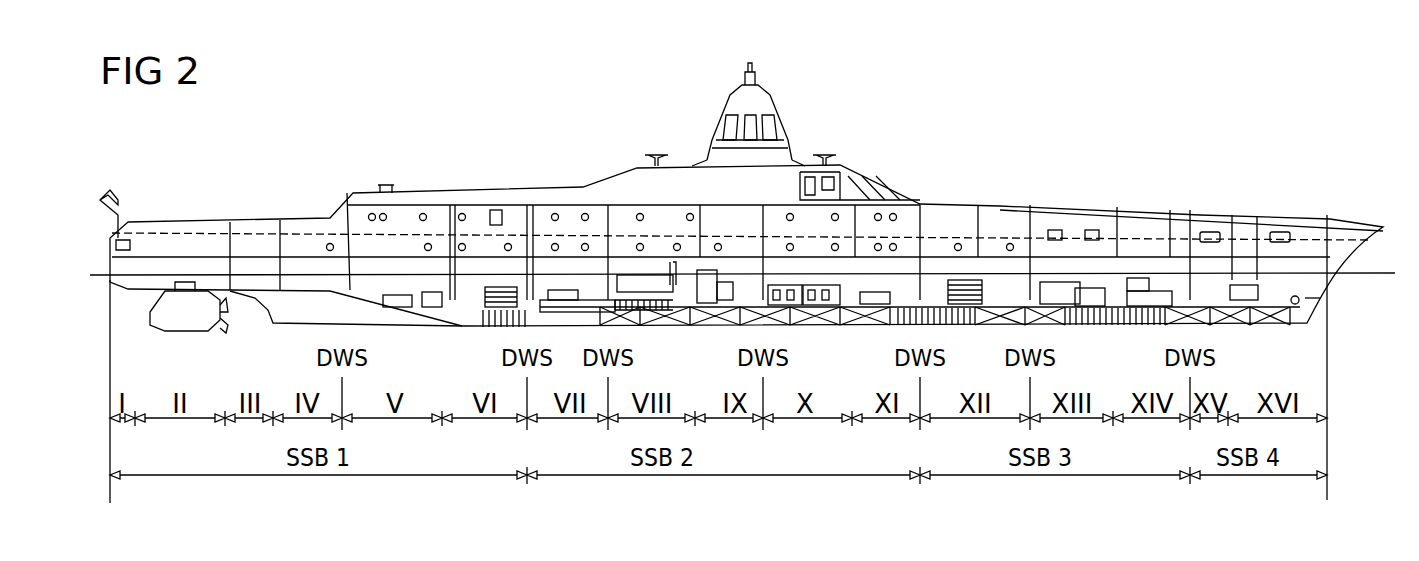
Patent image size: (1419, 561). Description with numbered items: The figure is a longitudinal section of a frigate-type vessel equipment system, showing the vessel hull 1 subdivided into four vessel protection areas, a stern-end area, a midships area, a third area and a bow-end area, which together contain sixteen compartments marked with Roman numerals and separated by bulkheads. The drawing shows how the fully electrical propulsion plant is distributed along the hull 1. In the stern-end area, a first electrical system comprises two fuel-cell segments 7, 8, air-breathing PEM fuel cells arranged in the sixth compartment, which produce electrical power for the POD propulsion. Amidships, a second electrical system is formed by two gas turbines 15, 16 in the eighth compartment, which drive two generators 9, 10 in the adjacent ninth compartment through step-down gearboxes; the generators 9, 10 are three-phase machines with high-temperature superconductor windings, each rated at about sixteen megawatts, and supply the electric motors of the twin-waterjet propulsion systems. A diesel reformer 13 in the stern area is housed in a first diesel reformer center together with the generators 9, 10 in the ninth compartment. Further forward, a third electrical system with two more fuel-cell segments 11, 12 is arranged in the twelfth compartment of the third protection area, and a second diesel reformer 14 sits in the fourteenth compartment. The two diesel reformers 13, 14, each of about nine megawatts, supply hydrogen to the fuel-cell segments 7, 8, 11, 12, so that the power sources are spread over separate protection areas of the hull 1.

The vessel hull 1 is at (1240, 196).
The fuel-cell segment 7 is at (492, 412).
The fuel-cell segment 8 is at (508, 308).
The generator 9 is at (695, 201).
The generator 10 is at (727, 280).
The fuel-cell segment 11 is at (957, 230).
The fuel-cell segment 12 is at (963, 280).
The diesel reformer 13 is at (783, 300).
The diesel reformer 14 is at (1137, 280).
The gas turbine 15 is at (617, 205).
The gas turbine 16 is at (627, 280).